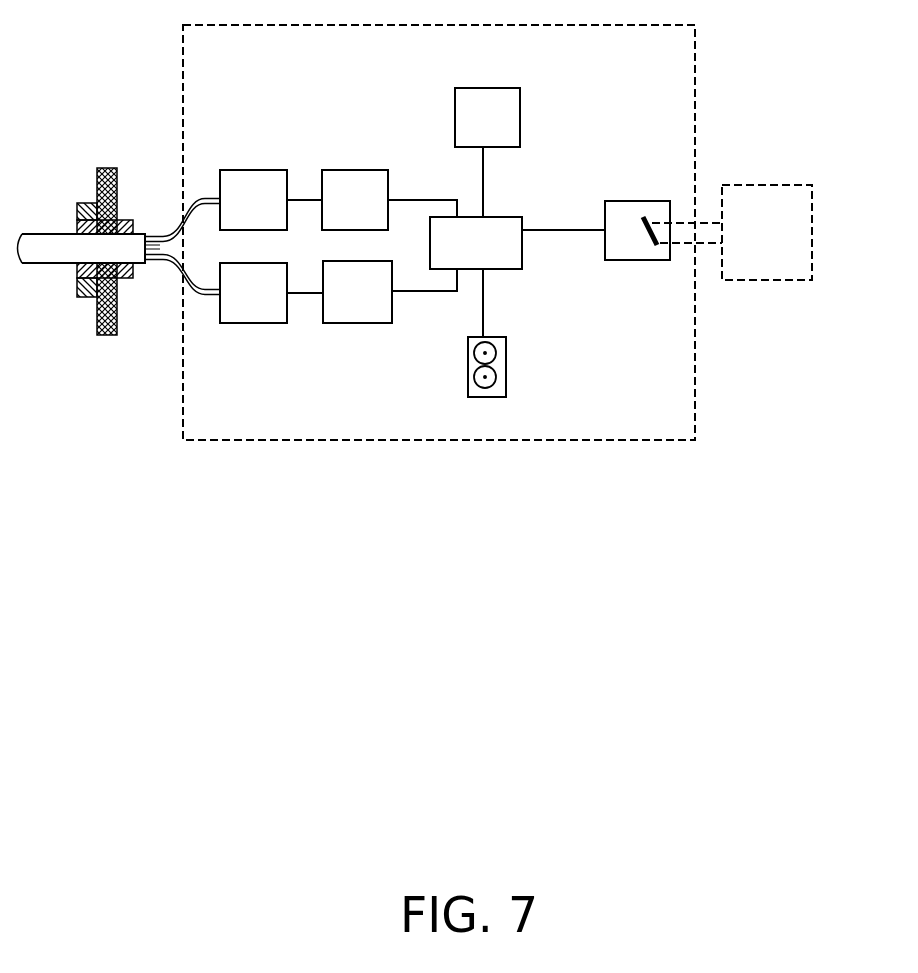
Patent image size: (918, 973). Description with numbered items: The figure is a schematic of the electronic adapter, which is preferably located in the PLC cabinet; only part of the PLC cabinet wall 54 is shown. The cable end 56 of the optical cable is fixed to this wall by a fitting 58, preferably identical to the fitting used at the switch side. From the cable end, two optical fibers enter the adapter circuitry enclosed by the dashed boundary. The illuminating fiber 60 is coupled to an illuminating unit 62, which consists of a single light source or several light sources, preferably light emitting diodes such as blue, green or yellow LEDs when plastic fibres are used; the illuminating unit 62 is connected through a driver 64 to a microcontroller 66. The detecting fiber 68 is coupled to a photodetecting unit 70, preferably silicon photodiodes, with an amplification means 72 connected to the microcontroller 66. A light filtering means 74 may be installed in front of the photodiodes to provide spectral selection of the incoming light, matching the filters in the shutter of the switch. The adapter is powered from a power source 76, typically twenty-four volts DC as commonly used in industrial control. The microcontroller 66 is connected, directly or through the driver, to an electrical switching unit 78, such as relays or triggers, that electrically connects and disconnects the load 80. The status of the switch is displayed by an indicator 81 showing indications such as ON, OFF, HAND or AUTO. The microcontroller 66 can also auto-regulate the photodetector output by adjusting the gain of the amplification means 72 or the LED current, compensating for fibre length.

The PLC cabinet wall 54 is at (102, 170).
The cable end 56 is at (33, 263).
The fitting 58 is at (122, 278).
The illuminating fiber 60 is at (198, 287).
The illuminating unit 62 is at (255, 303).
The driver 64 is at (358, 300).
The microcontroller 66 is at (490, 247).
The detecting fiber 68 is at (184, 212).
The photodetecting unit 70 is at (253, 187).
The amplification means 72 is at (353, 185).
The light filtering means 74 is at (218, 197).
The power source 76 is at (490, 100).
The electrical switching unit 78 is at (618, 252).
The load 80 is at (768, 202).
The indicator 81 is at (498, 367).